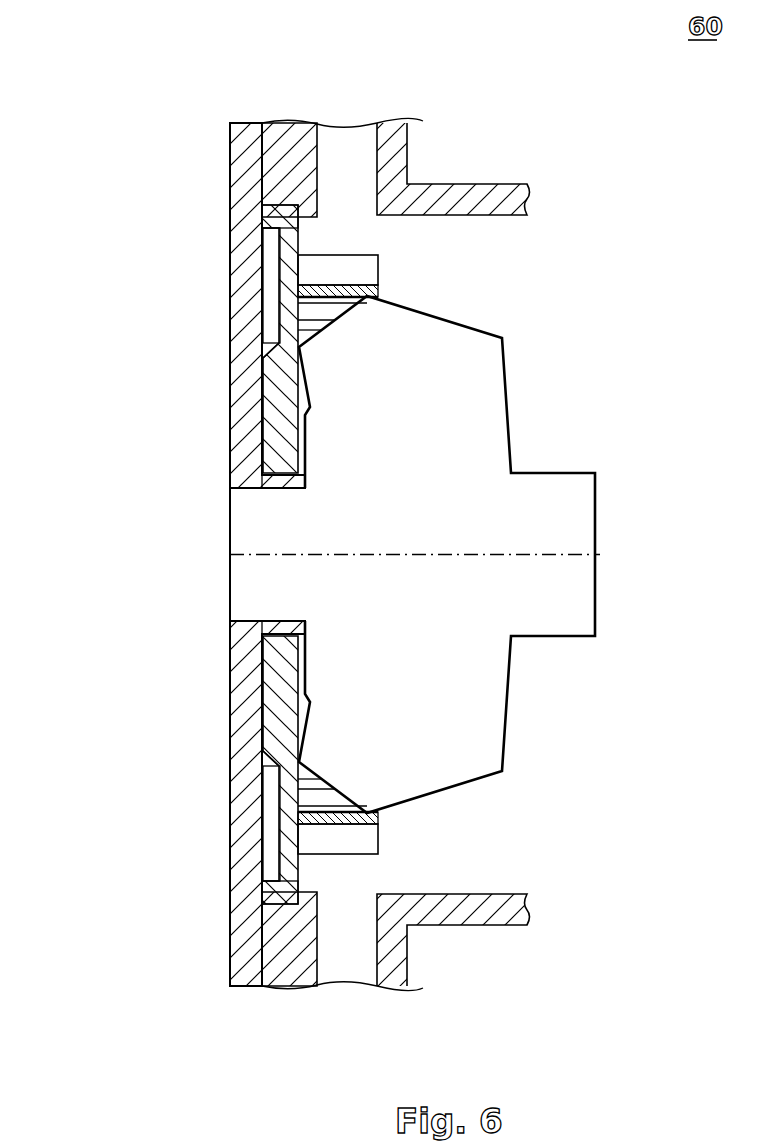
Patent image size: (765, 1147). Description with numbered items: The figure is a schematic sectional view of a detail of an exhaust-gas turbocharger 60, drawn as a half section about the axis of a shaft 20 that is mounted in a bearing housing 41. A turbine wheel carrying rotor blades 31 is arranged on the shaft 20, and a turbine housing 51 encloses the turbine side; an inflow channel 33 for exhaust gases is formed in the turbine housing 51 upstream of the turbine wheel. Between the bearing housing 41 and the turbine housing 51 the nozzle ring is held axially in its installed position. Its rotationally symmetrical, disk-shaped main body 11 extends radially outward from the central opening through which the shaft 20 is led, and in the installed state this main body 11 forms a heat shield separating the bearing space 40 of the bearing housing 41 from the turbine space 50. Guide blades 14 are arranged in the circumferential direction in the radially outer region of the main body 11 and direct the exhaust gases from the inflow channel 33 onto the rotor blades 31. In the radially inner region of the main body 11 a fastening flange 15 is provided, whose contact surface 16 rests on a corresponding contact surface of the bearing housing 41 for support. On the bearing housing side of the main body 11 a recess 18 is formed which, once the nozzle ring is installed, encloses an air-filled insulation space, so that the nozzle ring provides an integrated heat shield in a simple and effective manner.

The main body 11 is at (290, 234).
The guide blades 14 is at (380, 285).
The fastening flange 15 is at (257, 423).
The contact surface 16 is at (260, 372).
The recess 18 is at (268, 275).
The shaft 20 is at (253, 518).
The rotor blades 31 is at (540, 402).
The inflow channel 33 is at (362, 176).
The bearing space 40 is at (107, 481).
The bearing housing 41 is at (243, 205).
The turbine space 50 is at (670, 473).
The turbine housing 51 is at (445, 197).
The exhaust-gas turbocharger 60 is at (705, 26).